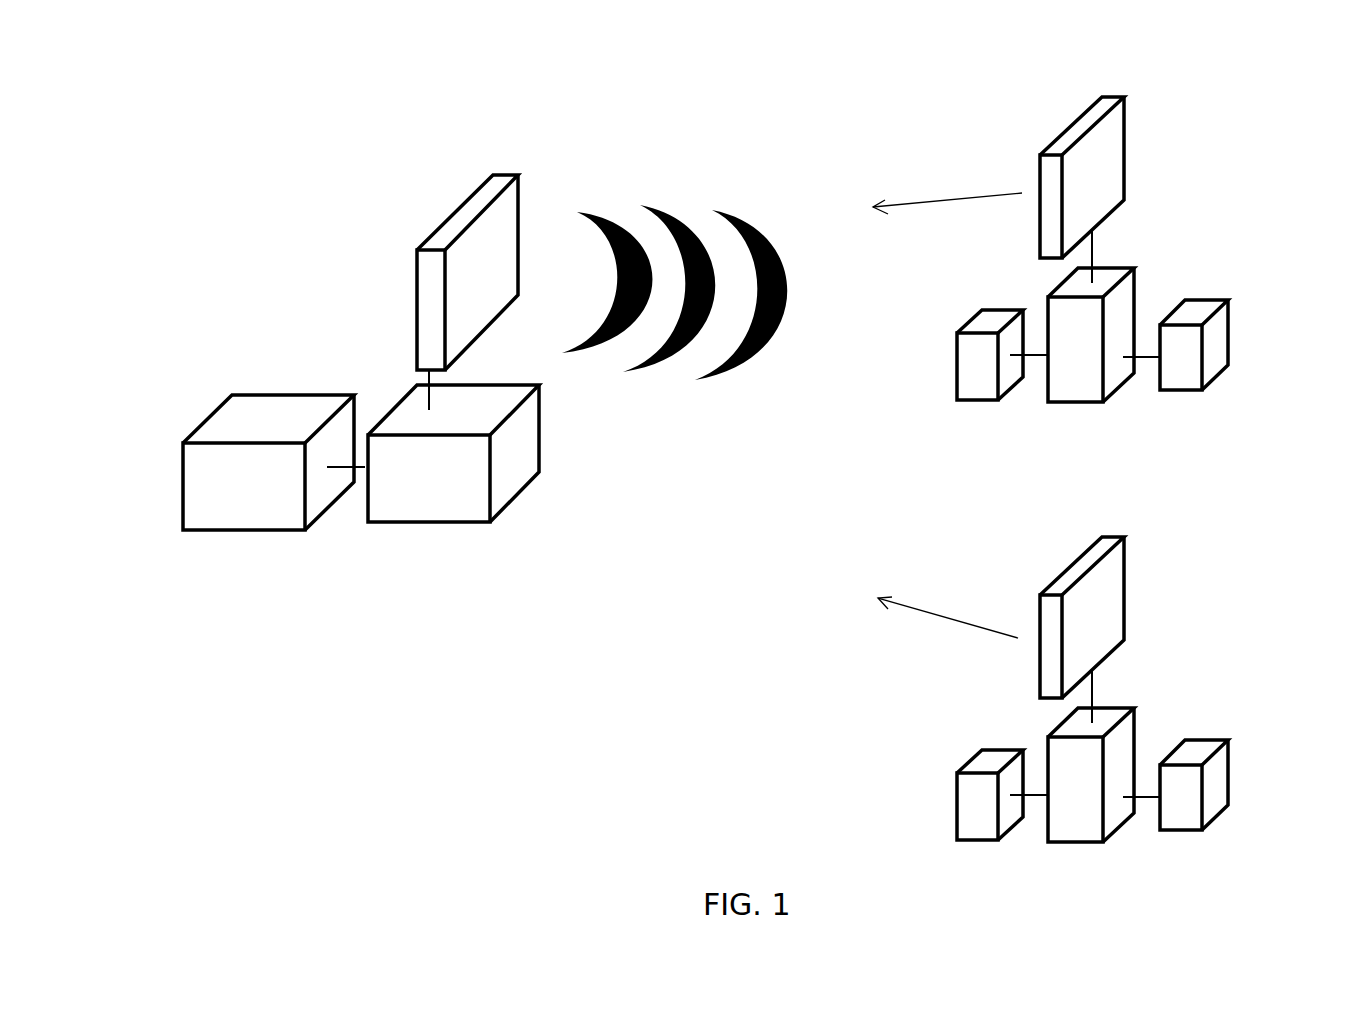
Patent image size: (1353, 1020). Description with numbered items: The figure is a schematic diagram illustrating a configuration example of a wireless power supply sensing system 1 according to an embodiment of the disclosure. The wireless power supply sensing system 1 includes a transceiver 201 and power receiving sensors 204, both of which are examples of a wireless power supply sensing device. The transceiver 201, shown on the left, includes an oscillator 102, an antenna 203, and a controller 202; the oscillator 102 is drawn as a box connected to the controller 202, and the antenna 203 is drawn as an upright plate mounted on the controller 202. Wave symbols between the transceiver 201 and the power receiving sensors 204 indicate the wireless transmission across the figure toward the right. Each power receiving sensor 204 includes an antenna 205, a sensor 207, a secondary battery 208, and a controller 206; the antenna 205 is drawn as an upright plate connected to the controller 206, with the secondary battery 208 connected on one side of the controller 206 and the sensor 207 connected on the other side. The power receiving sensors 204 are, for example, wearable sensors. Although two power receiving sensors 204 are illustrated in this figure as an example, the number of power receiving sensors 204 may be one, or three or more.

The wireless power supply sensing system 1 is at (740, 82).
The oscillator 102 is at (278, 402).
The transceiver 201 is at (319, 220).
The controller 202 is at (423, 523).
The antenna 203 is at (417, 323).
The power receiving sensor 204 is at (1165, 92).
The antenna 205 is at (1117, 173).
The controller 206 is at (1135, 290).
The sensor 207 is at (1228, 333).
The secondary battery 208 is at (955, 365).